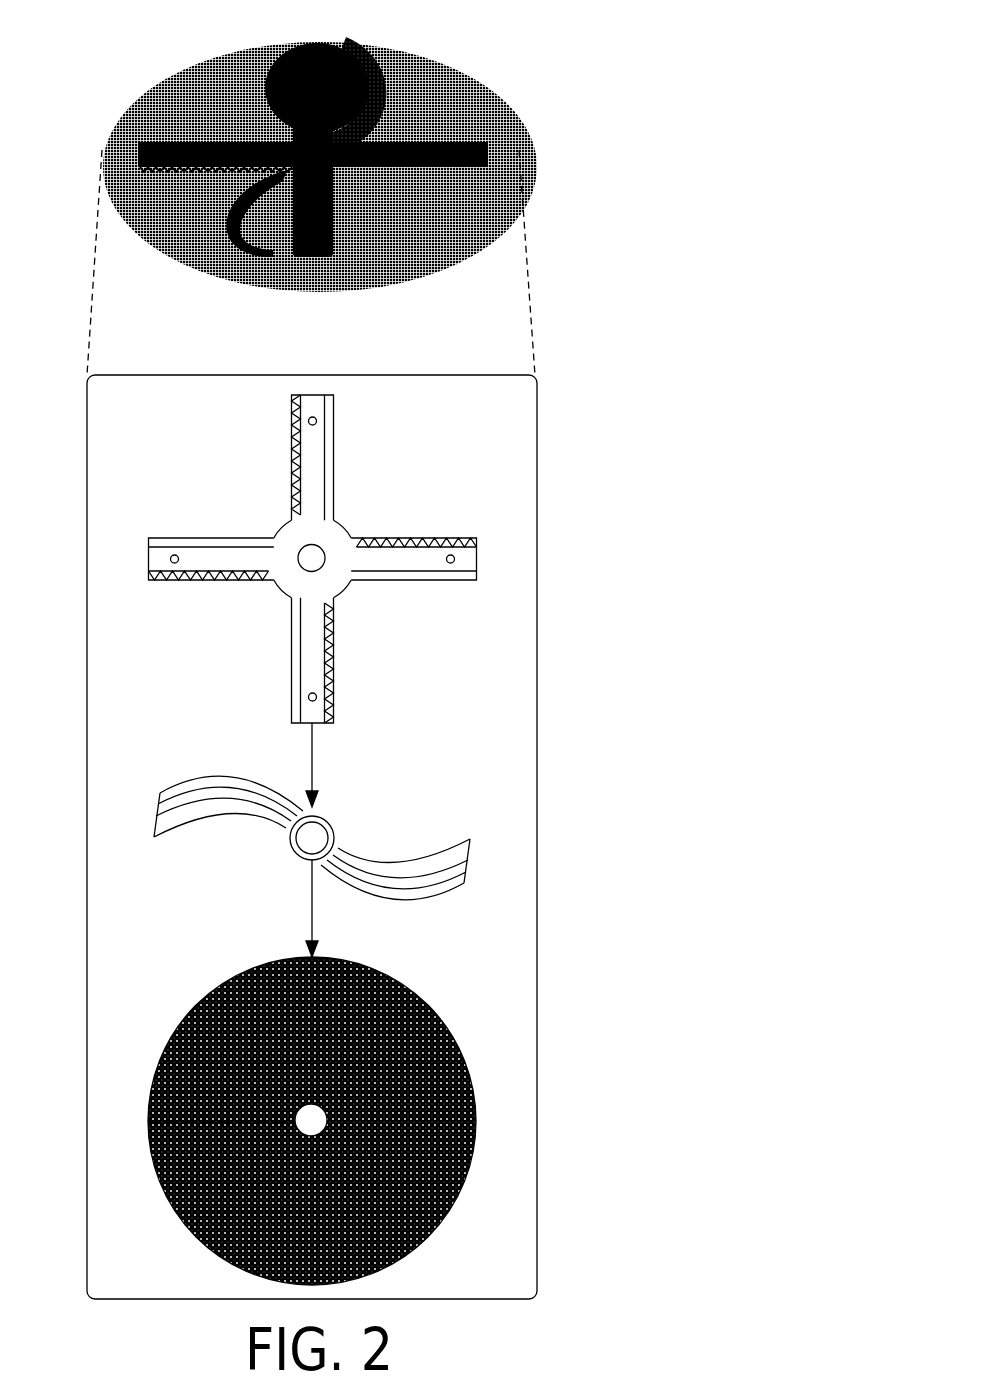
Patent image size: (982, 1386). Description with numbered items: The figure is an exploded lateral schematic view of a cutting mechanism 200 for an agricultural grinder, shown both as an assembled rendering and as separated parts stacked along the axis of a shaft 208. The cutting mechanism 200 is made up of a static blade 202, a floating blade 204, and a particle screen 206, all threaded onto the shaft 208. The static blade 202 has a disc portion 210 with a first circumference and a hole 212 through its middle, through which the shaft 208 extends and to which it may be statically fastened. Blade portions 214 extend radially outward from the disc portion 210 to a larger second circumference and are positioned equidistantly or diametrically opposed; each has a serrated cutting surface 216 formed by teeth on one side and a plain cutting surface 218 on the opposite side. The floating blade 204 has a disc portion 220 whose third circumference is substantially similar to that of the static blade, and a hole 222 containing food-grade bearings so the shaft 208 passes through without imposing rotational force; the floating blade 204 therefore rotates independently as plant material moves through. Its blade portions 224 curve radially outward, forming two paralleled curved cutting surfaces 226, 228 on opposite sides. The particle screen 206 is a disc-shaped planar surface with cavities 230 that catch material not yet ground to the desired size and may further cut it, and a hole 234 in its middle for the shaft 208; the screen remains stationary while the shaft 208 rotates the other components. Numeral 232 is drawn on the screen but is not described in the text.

The cutting mechanism 200 is at (639, 39).
The static blade 202 is at (355, 401).
The floating blade 204 is at (355, 468).
The particle screen 206 is at (302, 675).
The shaft 208 is at (297, 48).
The disc portion 210 is at (280, 541).
The hole 212 is at (354, 579).
The blade portions 214 is at (469, 565).
The serrated cutting surface 216 is at (199, 580).
The plain cutting surface 218 is at (199, 521).
The disc portion 220 is at (353, 826).
The hole 222 is at (297, 859).
The blade portions 224 is at (484, 866).
The cutting surface 226 is at (209, 828).
The cutting surface 228 is at (210, 766).
The cavities 230 is at (453, 1061).
The channel 232 is at (160, 1105).
The hole 234 is at (293, 1147).